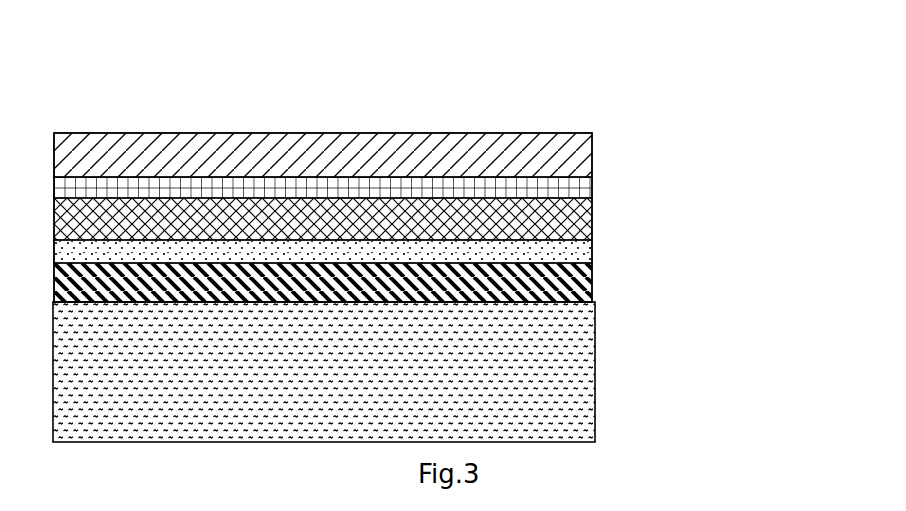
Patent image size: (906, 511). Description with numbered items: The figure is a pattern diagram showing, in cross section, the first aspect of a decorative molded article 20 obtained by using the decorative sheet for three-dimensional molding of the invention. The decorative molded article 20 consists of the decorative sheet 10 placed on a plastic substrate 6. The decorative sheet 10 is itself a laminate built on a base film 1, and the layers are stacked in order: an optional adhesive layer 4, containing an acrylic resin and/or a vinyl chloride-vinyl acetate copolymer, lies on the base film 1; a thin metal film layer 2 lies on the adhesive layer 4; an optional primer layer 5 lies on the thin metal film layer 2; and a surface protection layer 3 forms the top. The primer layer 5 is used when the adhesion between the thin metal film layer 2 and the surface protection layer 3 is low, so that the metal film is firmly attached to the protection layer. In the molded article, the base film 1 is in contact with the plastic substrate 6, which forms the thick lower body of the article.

The decorative molded article 20 is at (423, 224).
The decorative sheet for three-dimensional molding 10 is at (423, 206).
The surface protection layer 3 is at (592, 140).
The primer layer 5 is at (592, 180).
The thin metal film layer 2 is at (592, 218).
The adhesive layer 4 is at (560, 254).
The base film 1 is at (363, 282).
The plastic substrate 6 is at (595, 358).